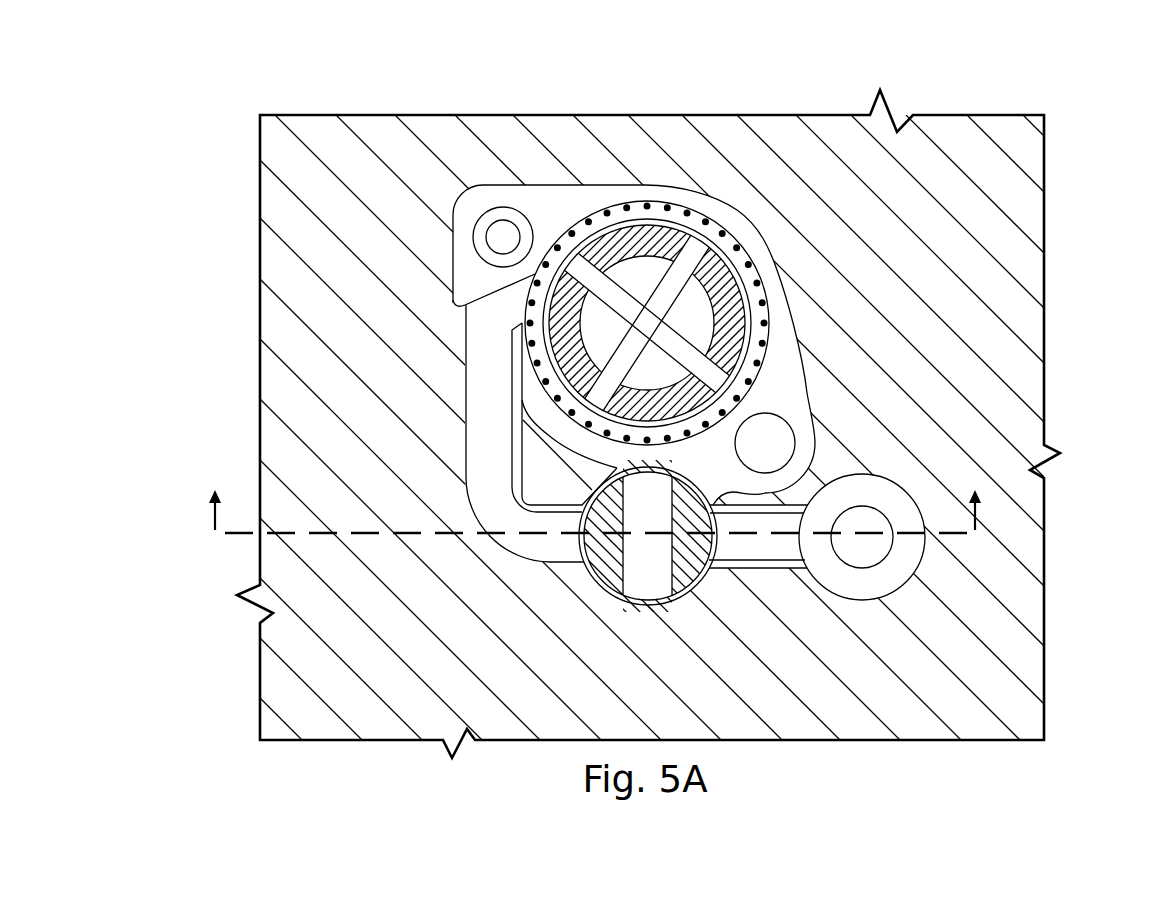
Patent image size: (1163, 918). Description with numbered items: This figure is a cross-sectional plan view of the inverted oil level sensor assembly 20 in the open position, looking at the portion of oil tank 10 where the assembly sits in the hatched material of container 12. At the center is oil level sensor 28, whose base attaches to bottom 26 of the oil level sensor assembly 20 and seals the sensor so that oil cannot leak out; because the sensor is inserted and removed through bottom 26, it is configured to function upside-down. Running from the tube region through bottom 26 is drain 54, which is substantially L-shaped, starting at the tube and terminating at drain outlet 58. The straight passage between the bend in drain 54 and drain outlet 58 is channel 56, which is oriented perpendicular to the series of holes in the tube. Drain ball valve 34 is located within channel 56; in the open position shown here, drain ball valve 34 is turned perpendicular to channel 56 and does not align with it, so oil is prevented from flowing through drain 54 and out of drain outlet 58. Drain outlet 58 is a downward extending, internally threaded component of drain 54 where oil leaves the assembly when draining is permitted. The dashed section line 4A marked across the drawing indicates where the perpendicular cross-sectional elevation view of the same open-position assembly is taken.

The oil tank 10 is at (1088, 100).
The container 12 is at (315, 208).
The oil level sensor assembly 20 is at (614, 100).
The bottom 26 is at (537, 207).
The oil level sensor 28 is at (717, 281).
The drain ball valve 34 is at (690, 557).
The drain 54 is at (476, 367).
The channel 56 is at (788, 543).
The drain outlet 58 is at (905, 556).
The section line 4A- 4A is at (595, 499).